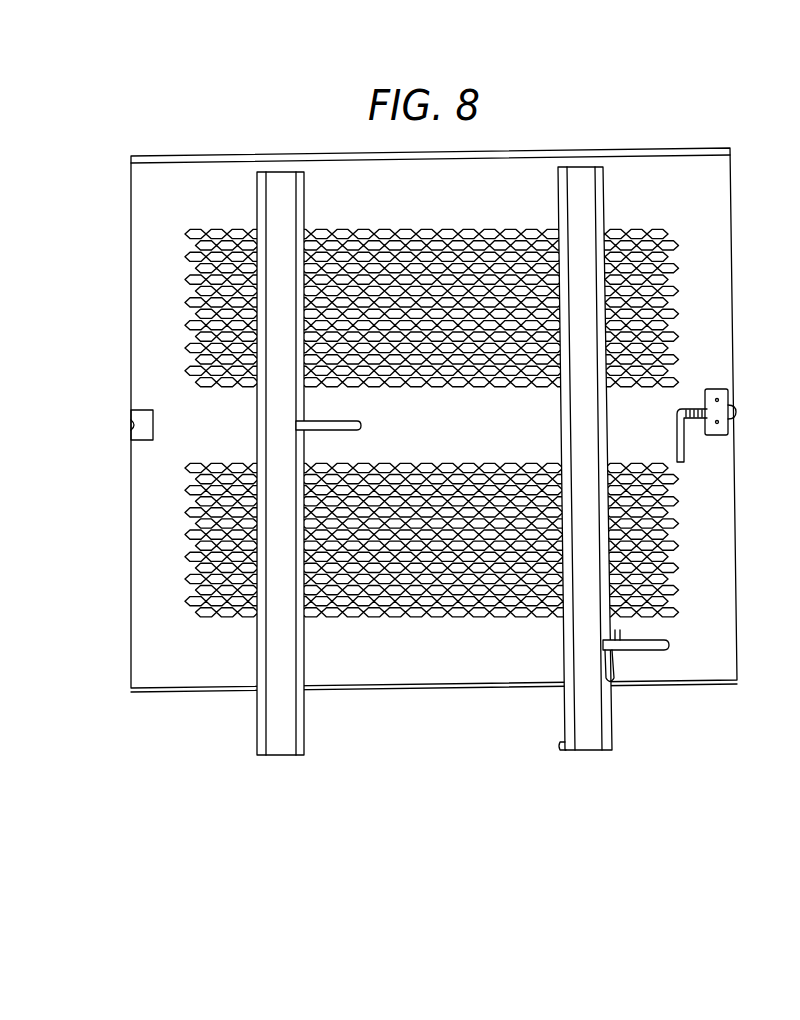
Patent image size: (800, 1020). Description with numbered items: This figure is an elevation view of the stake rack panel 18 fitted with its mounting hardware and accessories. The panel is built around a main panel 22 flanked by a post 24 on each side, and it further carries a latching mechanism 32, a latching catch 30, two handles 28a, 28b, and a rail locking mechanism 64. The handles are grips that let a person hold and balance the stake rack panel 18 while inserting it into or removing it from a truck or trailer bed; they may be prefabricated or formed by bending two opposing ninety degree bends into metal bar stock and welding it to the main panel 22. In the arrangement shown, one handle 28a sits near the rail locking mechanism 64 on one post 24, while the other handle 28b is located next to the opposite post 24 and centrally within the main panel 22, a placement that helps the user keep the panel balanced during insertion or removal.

The stake rack panel 18 is at (420, 721).
The main panel 22 is at (642, 185).
The post 24 is at (282, 750).
The handle 28a is at (660, 645).
The handle 28b is at (307, 427).
The latching catch 30 is at (726, 401).
The latching mechanism 32 is at (132, 438).
The rail locking mechanism 64 is at (617, 682).